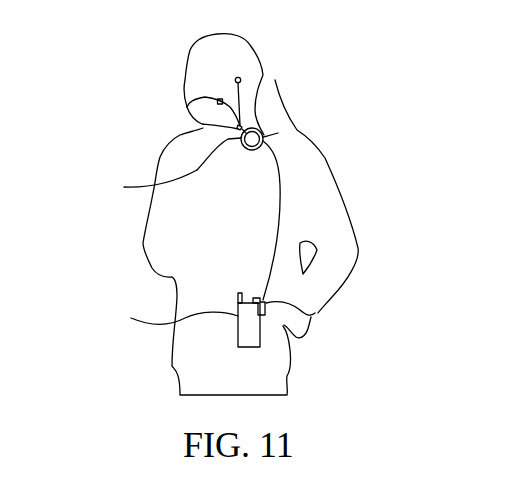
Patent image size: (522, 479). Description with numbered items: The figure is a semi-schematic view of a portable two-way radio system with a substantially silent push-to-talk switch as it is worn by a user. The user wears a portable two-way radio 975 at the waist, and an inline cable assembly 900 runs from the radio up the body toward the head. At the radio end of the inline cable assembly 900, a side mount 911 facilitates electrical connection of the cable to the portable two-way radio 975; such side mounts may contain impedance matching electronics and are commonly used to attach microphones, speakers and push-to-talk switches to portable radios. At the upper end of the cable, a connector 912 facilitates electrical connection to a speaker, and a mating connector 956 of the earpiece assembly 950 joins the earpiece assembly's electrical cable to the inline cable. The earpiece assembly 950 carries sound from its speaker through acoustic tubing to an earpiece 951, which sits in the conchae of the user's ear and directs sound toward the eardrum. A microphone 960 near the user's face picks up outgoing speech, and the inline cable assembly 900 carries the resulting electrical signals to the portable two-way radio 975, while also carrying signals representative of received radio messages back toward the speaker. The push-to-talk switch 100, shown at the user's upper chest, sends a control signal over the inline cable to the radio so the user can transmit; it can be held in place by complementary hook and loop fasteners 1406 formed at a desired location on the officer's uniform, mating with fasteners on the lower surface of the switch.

The push-to-talk switch 100 is at (250, 150).
The inline cable assembly 900 is at (275, 220).
The side mount 911 is at (318, 313).
The connector 912 is at (164, 169).
The connector 956 is at (142, 195).
The earpiece assembly 950 is at (227, 118).
The earpiece 951 is at (241, 78).
The microphone 960 is at (187, 107).
The portable two-way radio 975 is at (205, 316).
The complementary hook and loop fasteners 1406 is at (278, 133).